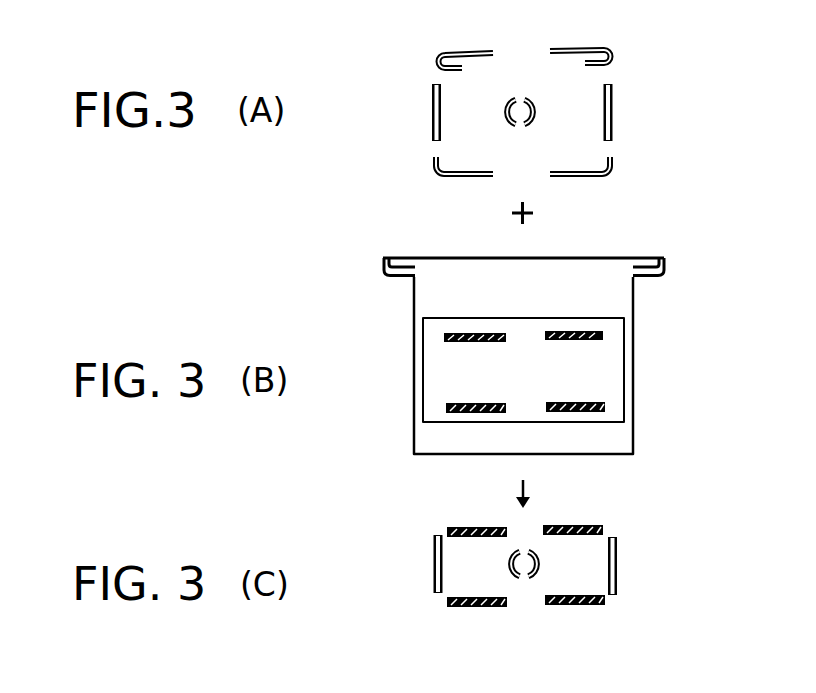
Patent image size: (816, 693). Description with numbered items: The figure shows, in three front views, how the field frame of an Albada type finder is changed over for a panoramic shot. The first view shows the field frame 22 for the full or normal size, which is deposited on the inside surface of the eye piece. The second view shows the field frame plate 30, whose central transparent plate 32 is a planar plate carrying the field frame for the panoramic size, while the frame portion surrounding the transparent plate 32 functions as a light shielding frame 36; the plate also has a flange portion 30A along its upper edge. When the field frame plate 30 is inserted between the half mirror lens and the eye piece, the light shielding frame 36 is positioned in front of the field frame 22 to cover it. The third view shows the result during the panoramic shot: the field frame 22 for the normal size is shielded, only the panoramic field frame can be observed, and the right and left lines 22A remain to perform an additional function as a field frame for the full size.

The field frame 22 is at (582, 50).
The right and left lines 22A is at (433, 566).
The field frame plate 30 is at (404, 405).
The flange of package body 30A is at (640, 258).
The transparent plate 32 is at (610, 370).
The light shielding frame 36 is at (588, 442).